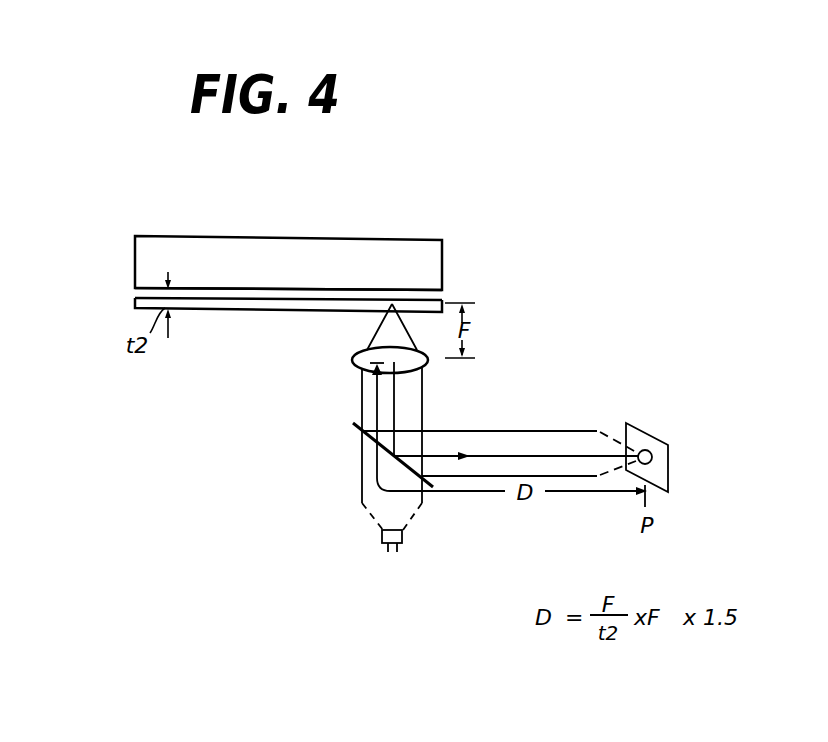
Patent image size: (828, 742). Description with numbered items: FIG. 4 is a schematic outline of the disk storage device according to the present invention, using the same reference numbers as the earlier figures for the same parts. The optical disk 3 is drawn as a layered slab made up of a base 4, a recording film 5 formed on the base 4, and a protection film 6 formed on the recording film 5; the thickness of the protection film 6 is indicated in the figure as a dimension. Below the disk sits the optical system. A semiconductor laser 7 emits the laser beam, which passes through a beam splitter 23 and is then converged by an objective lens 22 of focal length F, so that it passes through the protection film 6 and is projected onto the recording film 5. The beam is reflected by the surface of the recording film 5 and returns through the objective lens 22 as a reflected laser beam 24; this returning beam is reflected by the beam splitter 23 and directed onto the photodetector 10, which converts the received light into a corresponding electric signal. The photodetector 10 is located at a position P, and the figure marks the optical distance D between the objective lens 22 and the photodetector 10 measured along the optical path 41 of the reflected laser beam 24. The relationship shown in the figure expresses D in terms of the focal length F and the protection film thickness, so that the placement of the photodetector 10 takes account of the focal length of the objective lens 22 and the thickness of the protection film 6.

The optical disk 3 is at (57, 232).
The base 4 is at (135, 253).
The recording film 5 is at (135, 292).
The protection film 6 is at (135, 303).
The objective lens 22 is at (368, 372).
The optical path 41 is at (395, 392).
The reflected laser beam 24 is at (432, 456).
The beam splitter 23 is at (353, 423).
The semiconductor laser 7 is at (382, 540).
The photodetector 10 is at (647, 434).